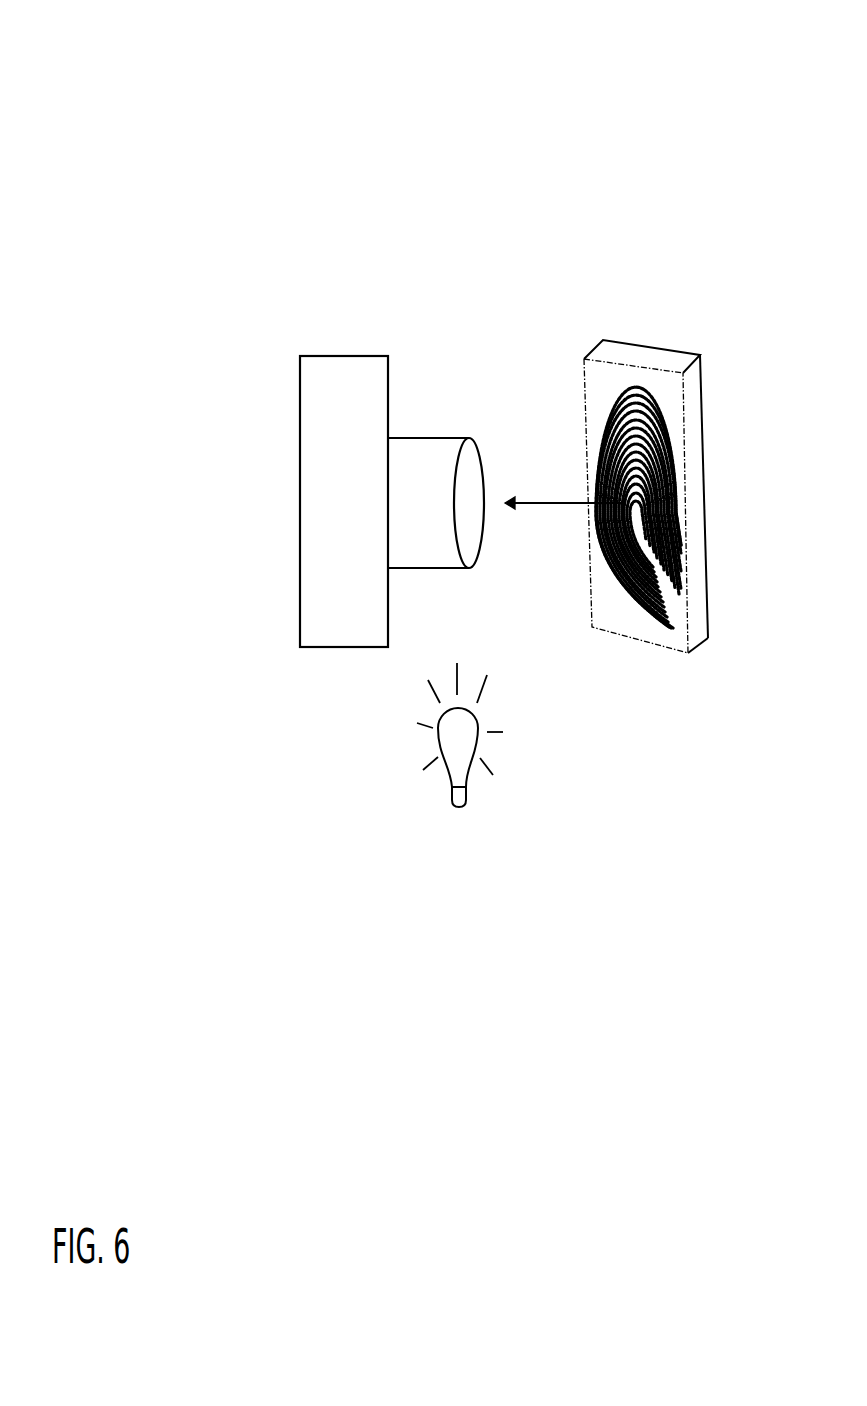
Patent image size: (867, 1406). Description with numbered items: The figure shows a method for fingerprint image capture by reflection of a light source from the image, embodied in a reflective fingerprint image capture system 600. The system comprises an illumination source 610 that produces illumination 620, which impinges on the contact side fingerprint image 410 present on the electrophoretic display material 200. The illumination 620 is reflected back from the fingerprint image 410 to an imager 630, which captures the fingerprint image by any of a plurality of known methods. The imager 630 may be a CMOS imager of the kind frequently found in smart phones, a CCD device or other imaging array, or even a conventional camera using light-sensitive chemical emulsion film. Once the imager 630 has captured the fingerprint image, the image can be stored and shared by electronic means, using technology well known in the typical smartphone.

The reflective fingerprint image capture system 600 is at (104, 186).
The illumination source 610 is at (427, 804).
The illumination 620 is at (610, 522).
The imager 630 is at (345, 571).
The contact side fingerprint image 410 is at (609, 578).
The electrophoretic display material 200 is at (698, 598).